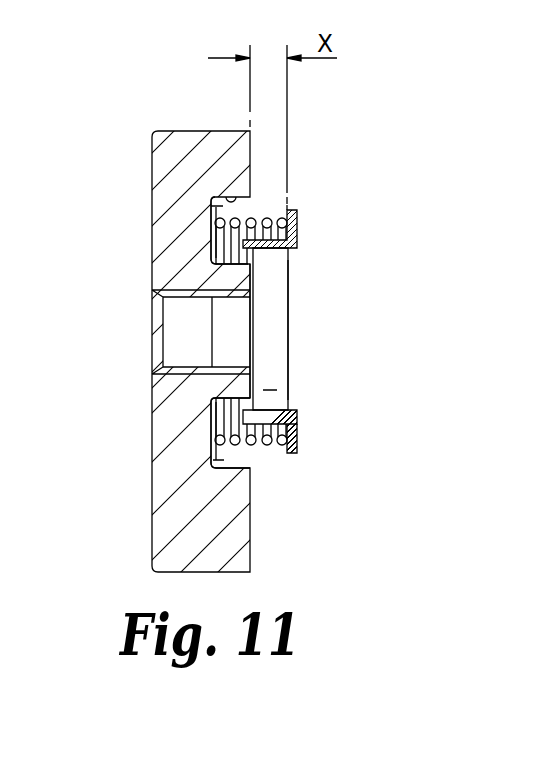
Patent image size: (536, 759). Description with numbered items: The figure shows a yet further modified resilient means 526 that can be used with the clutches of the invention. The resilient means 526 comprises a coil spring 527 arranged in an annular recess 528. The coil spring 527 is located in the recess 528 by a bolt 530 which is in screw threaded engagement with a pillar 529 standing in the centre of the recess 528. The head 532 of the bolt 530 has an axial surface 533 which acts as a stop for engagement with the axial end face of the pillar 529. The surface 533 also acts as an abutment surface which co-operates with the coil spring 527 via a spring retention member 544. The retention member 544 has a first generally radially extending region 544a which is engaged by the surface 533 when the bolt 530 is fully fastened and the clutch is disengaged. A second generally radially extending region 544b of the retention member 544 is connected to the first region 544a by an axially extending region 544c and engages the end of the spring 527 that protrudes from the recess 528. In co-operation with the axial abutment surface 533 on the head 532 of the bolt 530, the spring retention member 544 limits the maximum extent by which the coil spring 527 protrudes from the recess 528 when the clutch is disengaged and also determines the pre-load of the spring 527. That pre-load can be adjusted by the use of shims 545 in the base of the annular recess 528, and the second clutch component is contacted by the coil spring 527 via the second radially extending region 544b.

The resilient means 526 is at (304, 206).
The coil spring 527 is at (252, 444).
The annular recess 528 is at (230, 200).
The pillar 529 is at (222, 277).
The bolt 530 is at (240, 310).
The head 532 is at (277, 370).
The axial surface 533 is at (250, 390).
The spring retention member 544 is at (289, 424).
The first generally radially extending region 544a is at (249, 422).
The second generally radially extending region 544b is at (297, 443).
The axially extending region 544c is at (288, 249).
The shims 545 is at (212, 209).